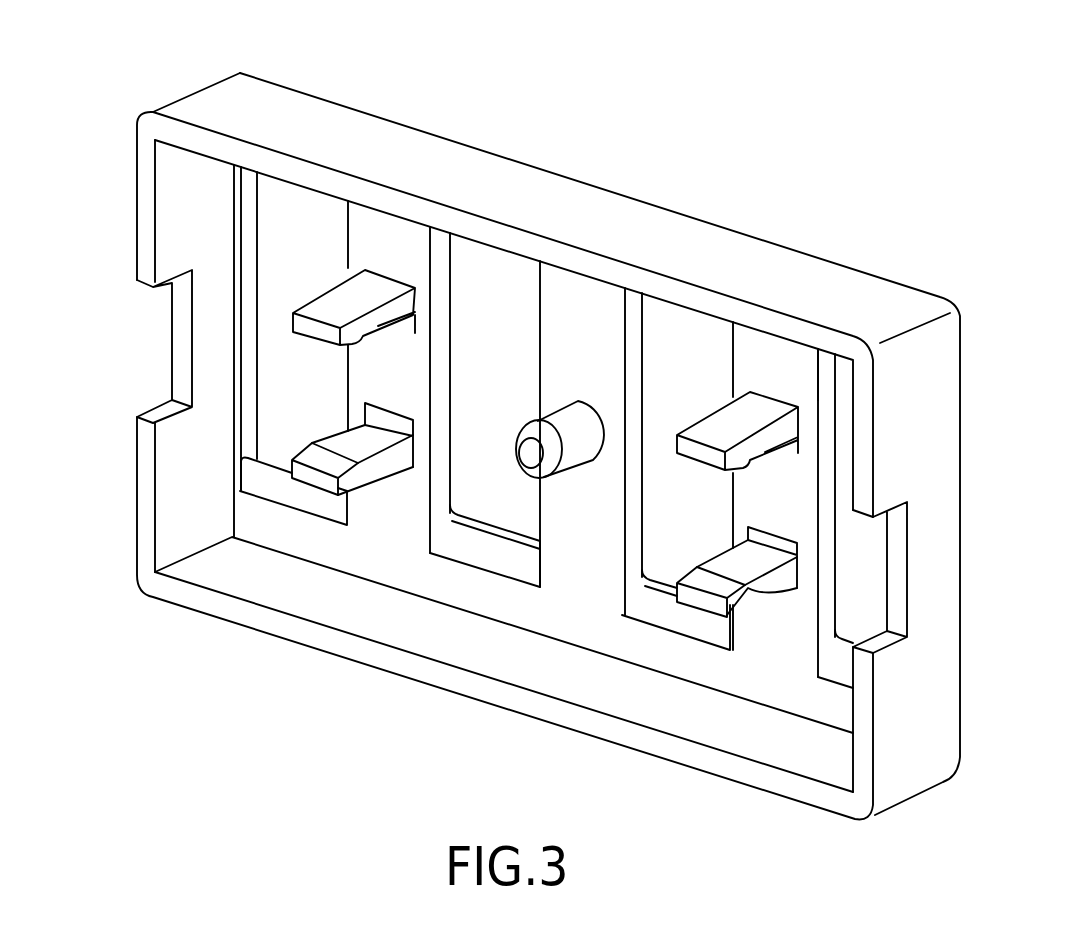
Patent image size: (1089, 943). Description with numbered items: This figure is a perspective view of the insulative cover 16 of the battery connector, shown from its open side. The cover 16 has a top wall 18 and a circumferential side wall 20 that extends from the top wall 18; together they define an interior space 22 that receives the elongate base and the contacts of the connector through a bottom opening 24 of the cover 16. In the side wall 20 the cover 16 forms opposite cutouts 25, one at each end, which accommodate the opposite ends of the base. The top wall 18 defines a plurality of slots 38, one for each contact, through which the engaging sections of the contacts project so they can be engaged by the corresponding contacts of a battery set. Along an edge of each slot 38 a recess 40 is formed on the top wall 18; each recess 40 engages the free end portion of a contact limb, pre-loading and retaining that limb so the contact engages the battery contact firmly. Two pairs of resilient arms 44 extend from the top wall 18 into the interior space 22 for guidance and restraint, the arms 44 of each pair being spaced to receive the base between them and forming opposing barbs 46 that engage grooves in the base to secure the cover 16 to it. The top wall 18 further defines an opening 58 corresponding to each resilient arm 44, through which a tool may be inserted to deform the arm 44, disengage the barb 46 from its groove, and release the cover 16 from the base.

The insulative cover 16 is at (876, 246).
The top wall 18 is at (777, 373).
The circumferential side wall 20 is at (822, 758).
The interior space 22 is at (790, 650).
The bottom opening 24 is at (153, 523).
The cutouts 25 is at (180, 355).
The slots 38 is at (305, 220).
The recess 40 is at (272, 480).
The resilient arms 44 is at (767, 578).
The barbs 46 is at (705, 602).
The opening 58 is at (403, 422).